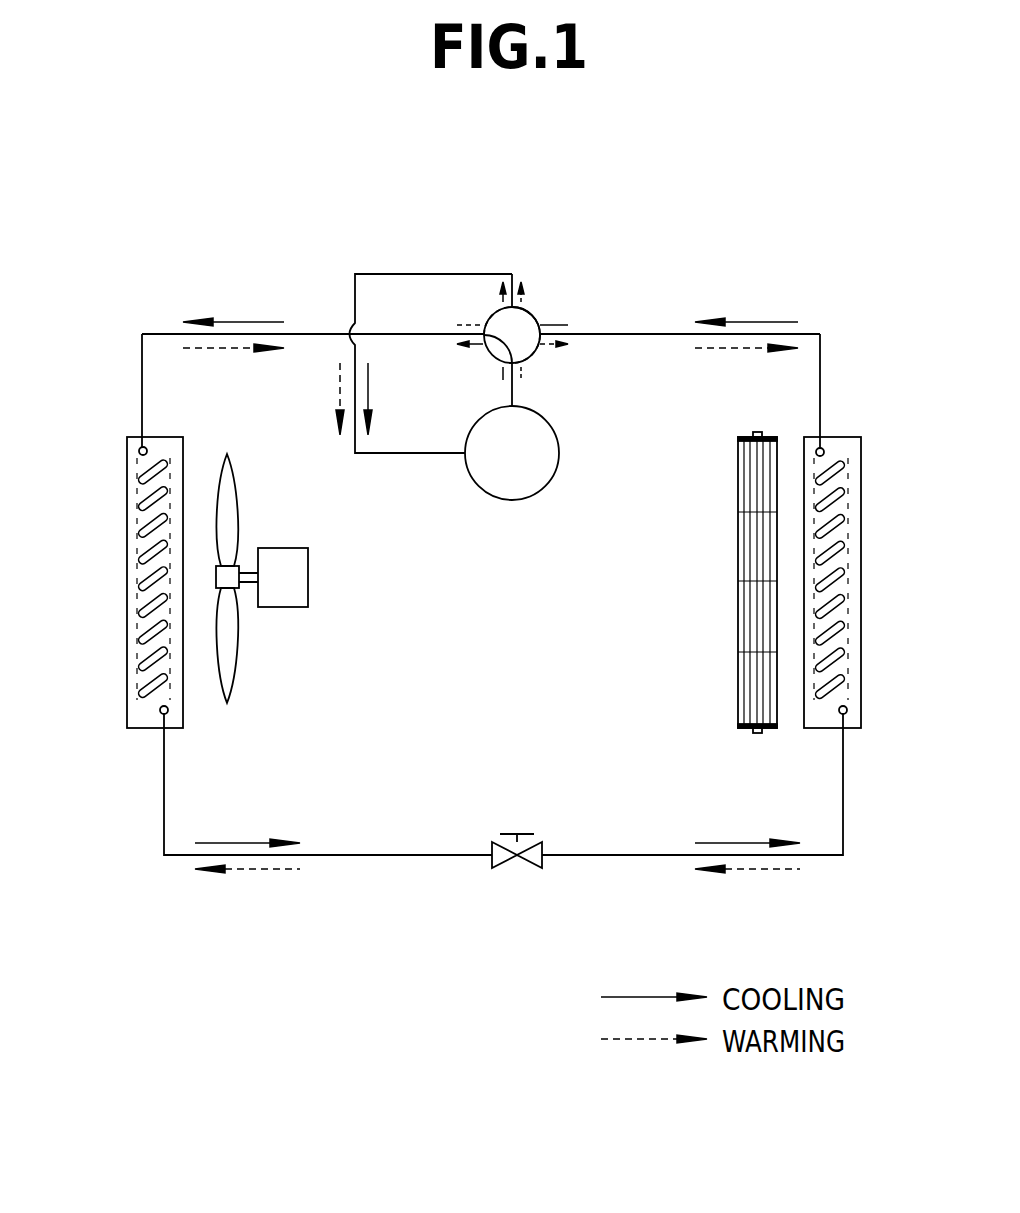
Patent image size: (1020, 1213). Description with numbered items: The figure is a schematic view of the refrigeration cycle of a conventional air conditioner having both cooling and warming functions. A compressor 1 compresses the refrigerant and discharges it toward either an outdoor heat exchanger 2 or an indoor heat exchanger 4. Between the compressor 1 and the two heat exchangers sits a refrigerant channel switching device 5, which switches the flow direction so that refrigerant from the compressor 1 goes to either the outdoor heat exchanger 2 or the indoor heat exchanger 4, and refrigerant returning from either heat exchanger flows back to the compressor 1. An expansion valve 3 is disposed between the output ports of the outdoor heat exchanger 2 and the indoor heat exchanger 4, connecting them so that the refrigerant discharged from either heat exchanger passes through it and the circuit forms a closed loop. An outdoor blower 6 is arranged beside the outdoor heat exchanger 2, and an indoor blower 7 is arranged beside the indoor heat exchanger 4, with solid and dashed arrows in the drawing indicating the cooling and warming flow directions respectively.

The compressor 1 is at (558, 440).
The outdoor heat exchanger 2 is at (127, 611).
The expansion valve 3 is at (494, 844).
The indoor heat exchanger 4 is at (861, 585).
The refrigerant channel switching device 5 is at (532, 315).
The outdoor blower 6 is at (300, 582).
The indoor blower 7 is at (741, 567).